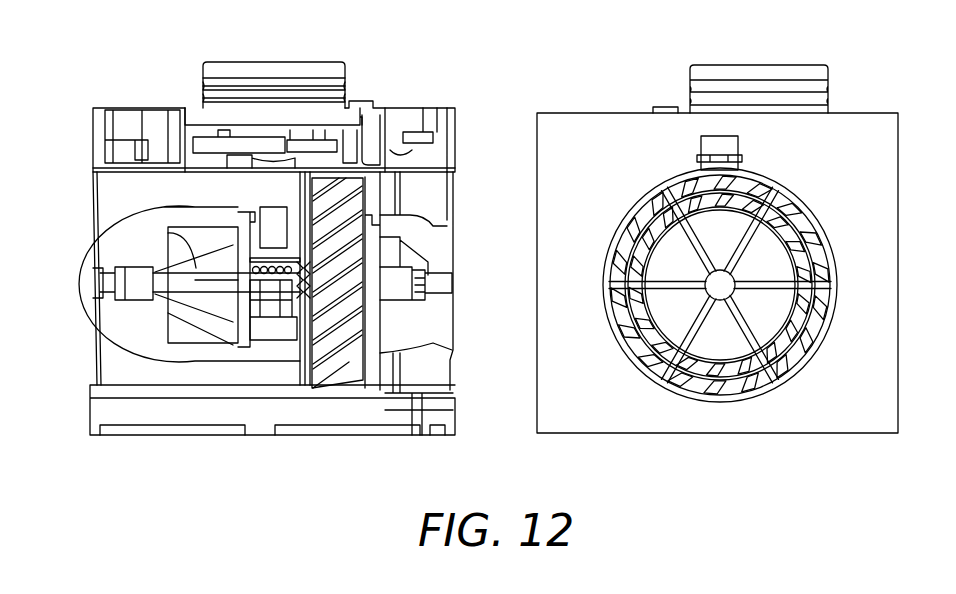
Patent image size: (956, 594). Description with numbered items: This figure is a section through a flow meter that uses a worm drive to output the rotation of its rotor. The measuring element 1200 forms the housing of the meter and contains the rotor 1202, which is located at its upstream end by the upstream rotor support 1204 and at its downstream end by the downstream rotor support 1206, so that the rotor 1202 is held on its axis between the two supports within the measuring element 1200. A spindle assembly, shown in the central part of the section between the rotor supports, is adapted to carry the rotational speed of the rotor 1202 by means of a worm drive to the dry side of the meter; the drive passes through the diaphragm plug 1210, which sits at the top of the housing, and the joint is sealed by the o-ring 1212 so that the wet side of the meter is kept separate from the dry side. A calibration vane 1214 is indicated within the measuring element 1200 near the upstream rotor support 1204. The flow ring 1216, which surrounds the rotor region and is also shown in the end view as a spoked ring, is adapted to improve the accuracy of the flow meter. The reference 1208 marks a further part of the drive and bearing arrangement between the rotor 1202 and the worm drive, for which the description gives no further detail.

The measuring element 1200 is at (145, 415).
The rotor 1202 is at (342, 368).
The upstream rotor support 1204 is at (100, 240).
The downstream rotor support 1206 is at (435, 370).
The bearing assembly 1208 is at (257, 342).
The diaphragm plug 1210 is at (204, 78).
The o-ring 1212 is at (203, 88).
The calibration vane 1214 is at (245, 197).
The flow ring 1216 is at (296, 382).